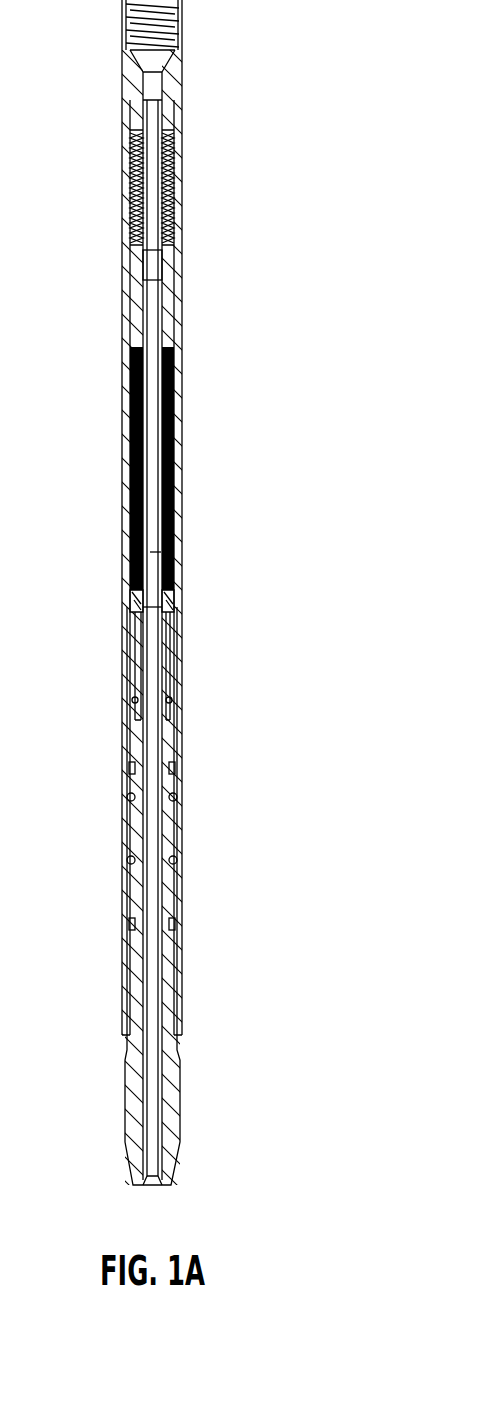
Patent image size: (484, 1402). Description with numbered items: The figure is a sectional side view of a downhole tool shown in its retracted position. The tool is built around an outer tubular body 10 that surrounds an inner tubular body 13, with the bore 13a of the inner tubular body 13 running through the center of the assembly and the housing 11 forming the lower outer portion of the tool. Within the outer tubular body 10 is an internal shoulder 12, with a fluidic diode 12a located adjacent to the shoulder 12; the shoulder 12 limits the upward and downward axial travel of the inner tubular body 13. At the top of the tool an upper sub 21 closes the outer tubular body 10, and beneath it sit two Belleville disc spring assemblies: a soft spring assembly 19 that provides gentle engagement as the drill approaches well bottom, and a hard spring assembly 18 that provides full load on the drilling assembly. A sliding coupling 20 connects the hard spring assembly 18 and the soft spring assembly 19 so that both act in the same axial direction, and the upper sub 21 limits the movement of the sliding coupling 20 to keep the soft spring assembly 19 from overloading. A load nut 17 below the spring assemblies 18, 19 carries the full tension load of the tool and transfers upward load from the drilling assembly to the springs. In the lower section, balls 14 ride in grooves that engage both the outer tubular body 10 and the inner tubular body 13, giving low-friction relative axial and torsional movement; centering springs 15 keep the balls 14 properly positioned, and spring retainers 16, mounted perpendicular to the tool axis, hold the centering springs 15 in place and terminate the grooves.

The outer tubular body 10 is at (122, 297).
The housing 11 is at (140, 800).
The internal shoulder 12 is at (134, 660).
The fluidic diode 12a is at (136, 700).
The inner tubular body 13 is at (133, 1092).
The mandrel bore 13a is at (178, 540).
The balls 14 is at (129, 796).
The centering springs 15 is at (129, 861).
The spring retainers 16 is at (128, 766).
The load nut 17 is at (172, 610).
The hard spring assembly 18 is at (177, 378).
The soft spring assembly 19 is at (175, 192).
The sliding coupling 20 is at (175, 268).
The upper sub 21 is at (172, 96).